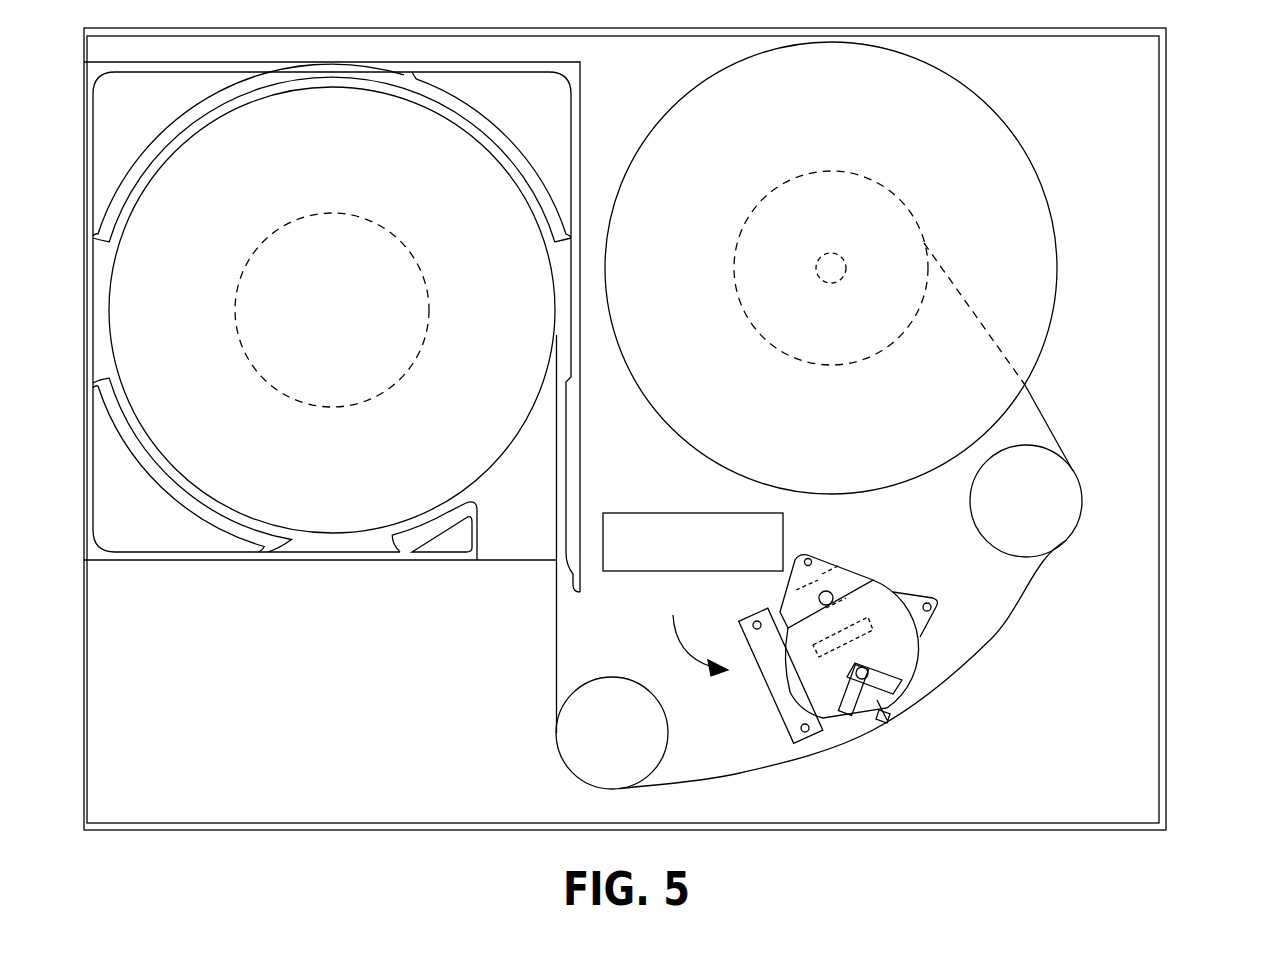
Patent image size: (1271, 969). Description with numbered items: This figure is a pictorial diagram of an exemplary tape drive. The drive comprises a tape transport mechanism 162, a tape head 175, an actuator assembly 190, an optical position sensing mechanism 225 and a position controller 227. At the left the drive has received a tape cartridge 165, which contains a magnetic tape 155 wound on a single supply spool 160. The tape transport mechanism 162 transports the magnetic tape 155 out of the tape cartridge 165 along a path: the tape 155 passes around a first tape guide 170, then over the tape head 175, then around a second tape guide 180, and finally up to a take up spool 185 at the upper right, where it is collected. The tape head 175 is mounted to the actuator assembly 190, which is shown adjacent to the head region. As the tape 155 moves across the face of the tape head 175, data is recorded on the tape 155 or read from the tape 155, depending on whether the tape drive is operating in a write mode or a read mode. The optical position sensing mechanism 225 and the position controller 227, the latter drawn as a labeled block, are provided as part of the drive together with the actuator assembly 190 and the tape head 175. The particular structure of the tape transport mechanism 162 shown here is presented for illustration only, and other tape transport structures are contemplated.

The magnetic tape 155 is at (990, 633).
The supply spool 160 is at (462, 157).
The tape transport mechanism 162 is at (1128, 410).
The tape cartridge 165 is at (580, 82).
The first tape guide 170 is at (554, 733).
The tape head 175 is at (887, 724).
The second tape guide 180 is at (1068, 540).
The take up spool 185 is at (1057, 268).
The actuator assembly 190 is at (693, 631).
The optical position sensing mechanism 225 is at (877, 625).
The position controller 227 is at (622, 511).